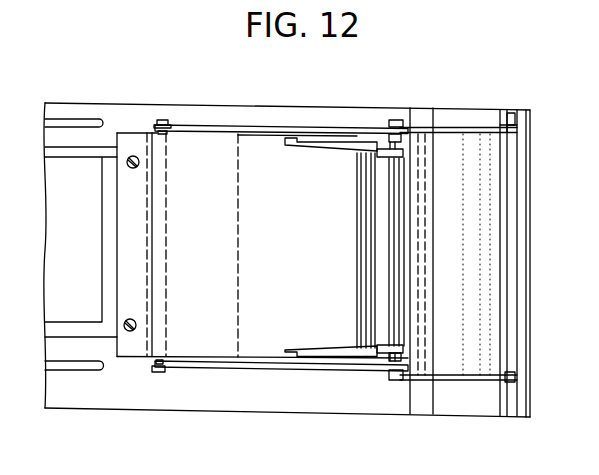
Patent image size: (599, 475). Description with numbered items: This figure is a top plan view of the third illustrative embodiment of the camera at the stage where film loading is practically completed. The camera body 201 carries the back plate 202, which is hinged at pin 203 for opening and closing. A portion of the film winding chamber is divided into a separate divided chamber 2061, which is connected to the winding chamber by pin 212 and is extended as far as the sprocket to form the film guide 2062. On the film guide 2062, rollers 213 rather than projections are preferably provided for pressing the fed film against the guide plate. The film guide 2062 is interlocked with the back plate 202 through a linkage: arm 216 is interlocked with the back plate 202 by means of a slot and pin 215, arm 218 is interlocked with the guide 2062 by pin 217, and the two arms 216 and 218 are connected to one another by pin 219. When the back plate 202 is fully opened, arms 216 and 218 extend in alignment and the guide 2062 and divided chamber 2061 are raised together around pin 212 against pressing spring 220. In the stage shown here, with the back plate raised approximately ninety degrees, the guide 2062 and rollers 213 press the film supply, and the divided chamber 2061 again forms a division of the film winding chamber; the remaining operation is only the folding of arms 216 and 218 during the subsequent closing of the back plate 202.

The camera body 201 is at (116, 108).
The back plate 202 is at (492, 191).
The pin 203 is at (420, 275).
The divided chamber 2061 is at (332, 246).
The film guide 2062 is at (232, 244).
The pin 212 is at (383, 274).
The rollers 213 is at (158, 190).
The pin 215 is at (510, 114).
The arm 216 is at (456, 127).
The pin 217 is at (163, 118).
The arm 218 is at (305, 125).
The pin 219 is at (398, 120).
The pressing spring 220 is at (337, 150).